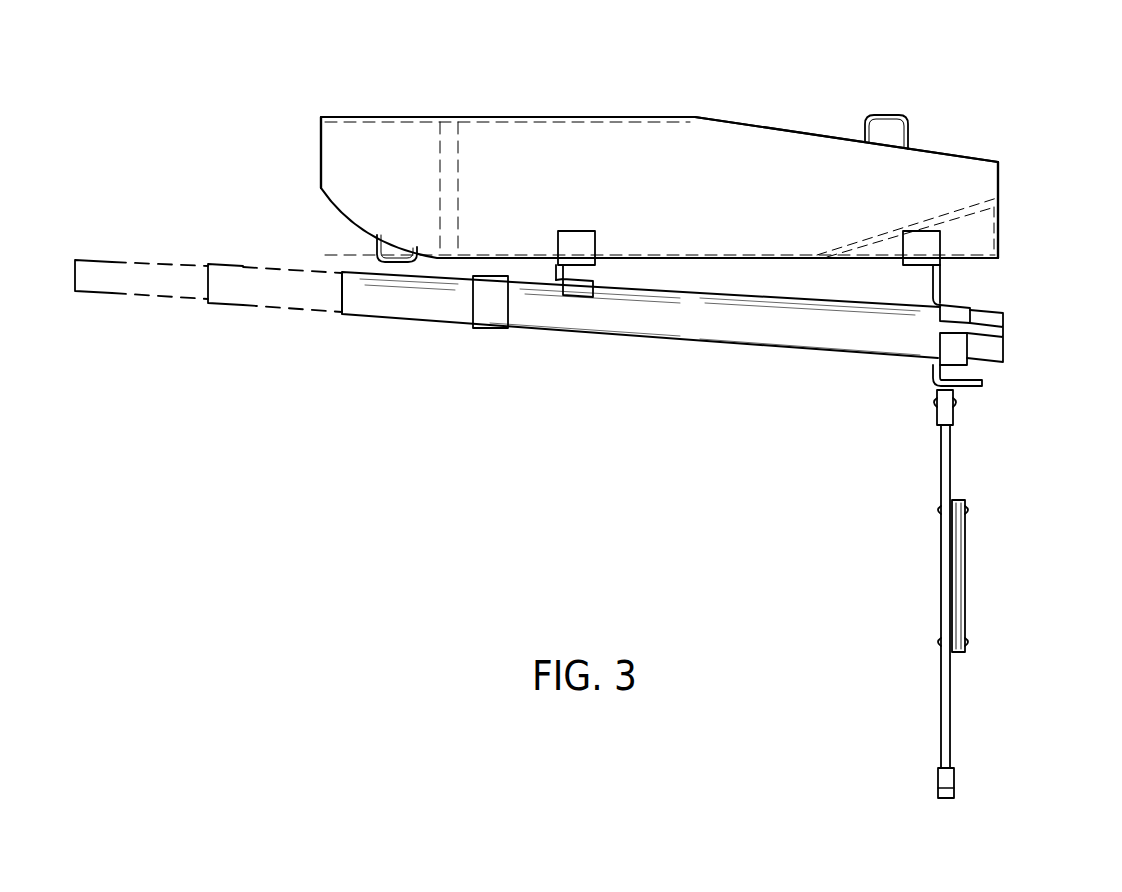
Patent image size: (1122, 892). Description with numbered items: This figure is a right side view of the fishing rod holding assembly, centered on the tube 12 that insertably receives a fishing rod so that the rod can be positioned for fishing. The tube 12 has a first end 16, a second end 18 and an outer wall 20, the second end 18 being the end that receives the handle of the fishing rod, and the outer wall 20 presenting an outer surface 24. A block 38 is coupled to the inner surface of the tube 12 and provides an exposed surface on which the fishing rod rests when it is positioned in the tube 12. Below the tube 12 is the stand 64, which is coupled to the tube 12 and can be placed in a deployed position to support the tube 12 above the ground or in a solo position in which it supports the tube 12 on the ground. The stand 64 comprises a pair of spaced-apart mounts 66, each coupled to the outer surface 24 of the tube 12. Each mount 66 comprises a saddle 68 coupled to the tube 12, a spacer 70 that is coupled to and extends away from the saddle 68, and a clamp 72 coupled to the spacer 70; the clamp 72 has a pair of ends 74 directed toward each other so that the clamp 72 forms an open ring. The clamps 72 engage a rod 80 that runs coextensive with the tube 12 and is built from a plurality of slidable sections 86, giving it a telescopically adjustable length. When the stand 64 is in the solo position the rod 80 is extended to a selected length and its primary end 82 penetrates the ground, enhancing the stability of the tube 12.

The tube 12 is at (556, 117).
The first end 16 is at (321, 142).
The second end 18 is at (998, 175).
The outer wall 20 is at (802, 137).
The outer surface 24 is at (712, 158).
The block 38 is at (955, 190).
The stand 64 is at (842, 453).
The mounts 66 is at (814, 351).
The saddle 68 is at (557, 240).
The spacer 70 is at (562, 283).
The clamp 72 is at (578, 297).
The ends 74 is at (965, 350).
The rod 80 is at (735, 348).
The primary end 82 is at (343, 300).
The slidable sections 86 is at (483, 330).